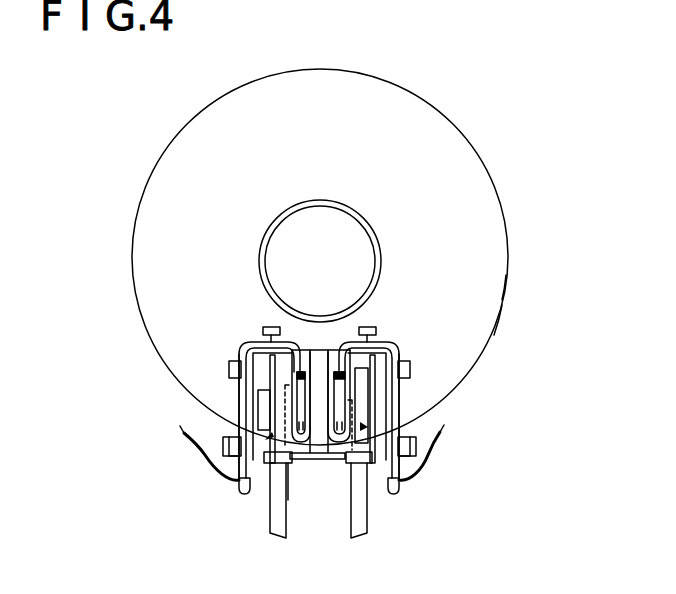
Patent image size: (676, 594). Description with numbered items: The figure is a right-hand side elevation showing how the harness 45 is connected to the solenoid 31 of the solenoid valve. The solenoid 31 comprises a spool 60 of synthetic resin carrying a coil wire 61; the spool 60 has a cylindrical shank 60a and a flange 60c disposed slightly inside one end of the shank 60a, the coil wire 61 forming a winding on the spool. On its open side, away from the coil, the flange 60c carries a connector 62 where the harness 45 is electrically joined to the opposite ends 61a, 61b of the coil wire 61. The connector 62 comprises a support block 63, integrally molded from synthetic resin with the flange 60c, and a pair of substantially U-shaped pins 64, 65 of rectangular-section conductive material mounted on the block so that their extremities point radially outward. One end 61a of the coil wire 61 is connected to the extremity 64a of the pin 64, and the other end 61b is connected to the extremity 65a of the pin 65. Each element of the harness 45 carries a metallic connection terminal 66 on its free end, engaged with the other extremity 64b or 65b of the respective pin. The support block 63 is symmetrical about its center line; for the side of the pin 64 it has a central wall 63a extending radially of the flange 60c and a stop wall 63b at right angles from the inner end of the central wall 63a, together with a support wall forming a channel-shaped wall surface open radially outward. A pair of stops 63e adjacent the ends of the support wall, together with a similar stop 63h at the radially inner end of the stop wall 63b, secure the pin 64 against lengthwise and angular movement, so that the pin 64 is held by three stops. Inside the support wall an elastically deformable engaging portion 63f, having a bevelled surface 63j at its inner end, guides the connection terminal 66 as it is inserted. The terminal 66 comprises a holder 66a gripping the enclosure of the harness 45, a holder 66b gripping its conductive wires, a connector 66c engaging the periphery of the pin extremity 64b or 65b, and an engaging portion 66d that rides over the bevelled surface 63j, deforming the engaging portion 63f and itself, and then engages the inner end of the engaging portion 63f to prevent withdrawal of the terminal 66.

The solenoid 31 is at (507, 320).
The harness 45 is at (272, 540).
The spool 60 is at (505, 206).
The cylindrical shank 60a is at (372, 224).
The flange 60c is at (490, 294).
The coil wire 61 is at (431, 457).
The end of coil wire 61a is at (239, 483).
The end of coil wire 61b is at (403, 490).
The connector 62 is at (411, 397).
The support block 63 is at (310, 465).
The central wall 63a is at (340, 370).
The stop wall 63b is at (299, 370).
The stop 63e is at (229, 368).
The engaging portion 63f is at (256, 395).
The stop 63h is at (262, 328).
The bevelled surface 63j is at (264, 438).
The pin 64 is at (245, 335).
The extremity of pin 64a is at (240, 490).
The extremity of pin 64b is at (284, 492).
The pin 65 is at (402, 336).
The extremity of pin 65a is at (400, 497).
The extremity of pin 65b is at (314, 462).
The connection terminal 66 is at (238, 456).
The holder 66a is at (268, 464).
The holder 66b is at (352, 350).
The connector 66c is at (312, 400).
The engaging portion 66d is at (247, 346).